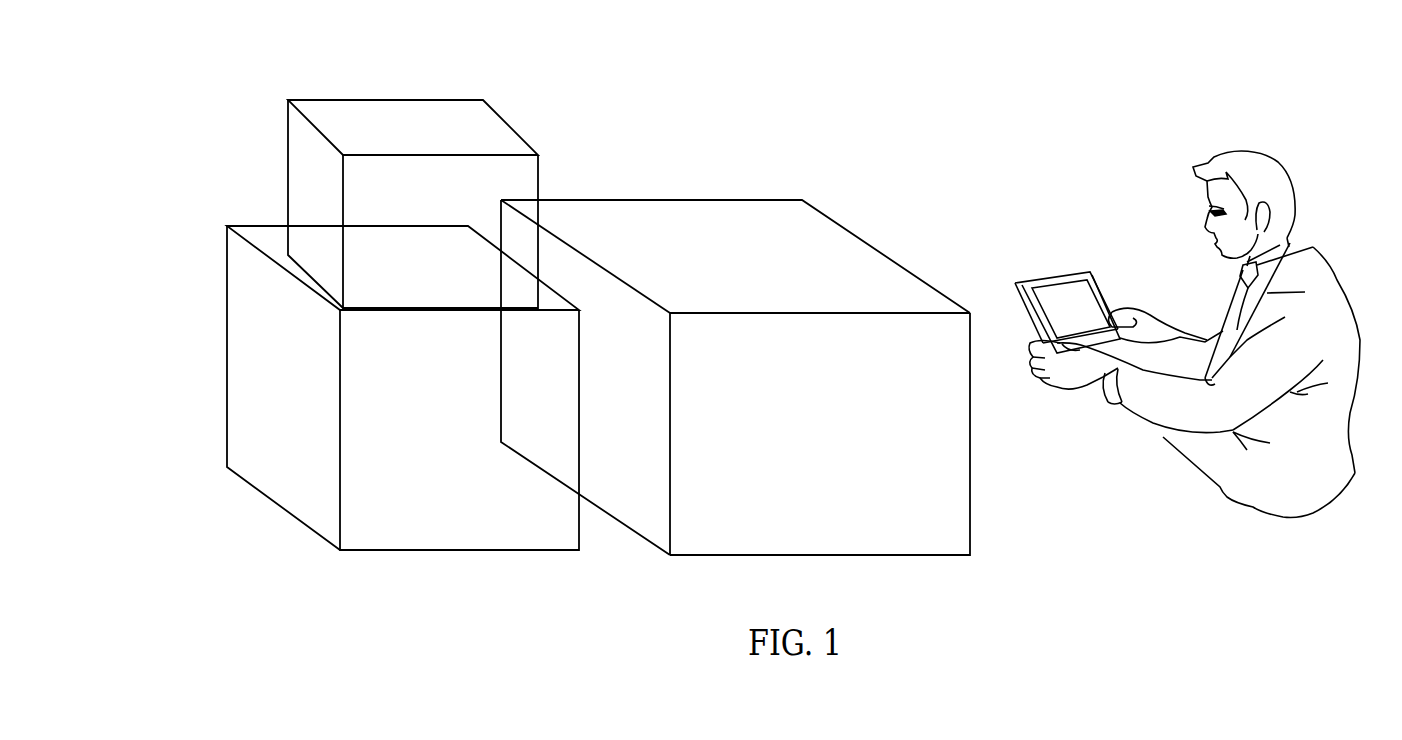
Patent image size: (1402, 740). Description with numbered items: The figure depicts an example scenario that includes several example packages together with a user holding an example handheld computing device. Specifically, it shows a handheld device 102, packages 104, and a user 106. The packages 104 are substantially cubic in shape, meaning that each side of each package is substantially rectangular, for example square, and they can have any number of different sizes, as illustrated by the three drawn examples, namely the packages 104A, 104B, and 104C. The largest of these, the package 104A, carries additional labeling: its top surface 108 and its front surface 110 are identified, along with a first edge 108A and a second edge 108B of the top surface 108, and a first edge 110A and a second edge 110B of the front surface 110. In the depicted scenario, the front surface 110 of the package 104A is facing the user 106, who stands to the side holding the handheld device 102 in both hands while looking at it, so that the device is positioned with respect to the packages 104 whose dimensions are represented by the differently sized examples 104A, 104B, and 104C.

The handheld device 102 is at (1053, 275).
The packages 104 is at (202, 94).
The package 104A is at (881, 208).
The package 104B is at (274, 170).
The package 104C is at (210, 318).
The user 106 is at (1338, 158).
The top surface 108 is at (752, 261).
The first edge 108A is at (822, 312).
The second edge 108B is at (590, 253).
The front surface 110 is at (835, 448).
The first edge 110A is at (742, 316).
The second edge 110B is at (672, 436).